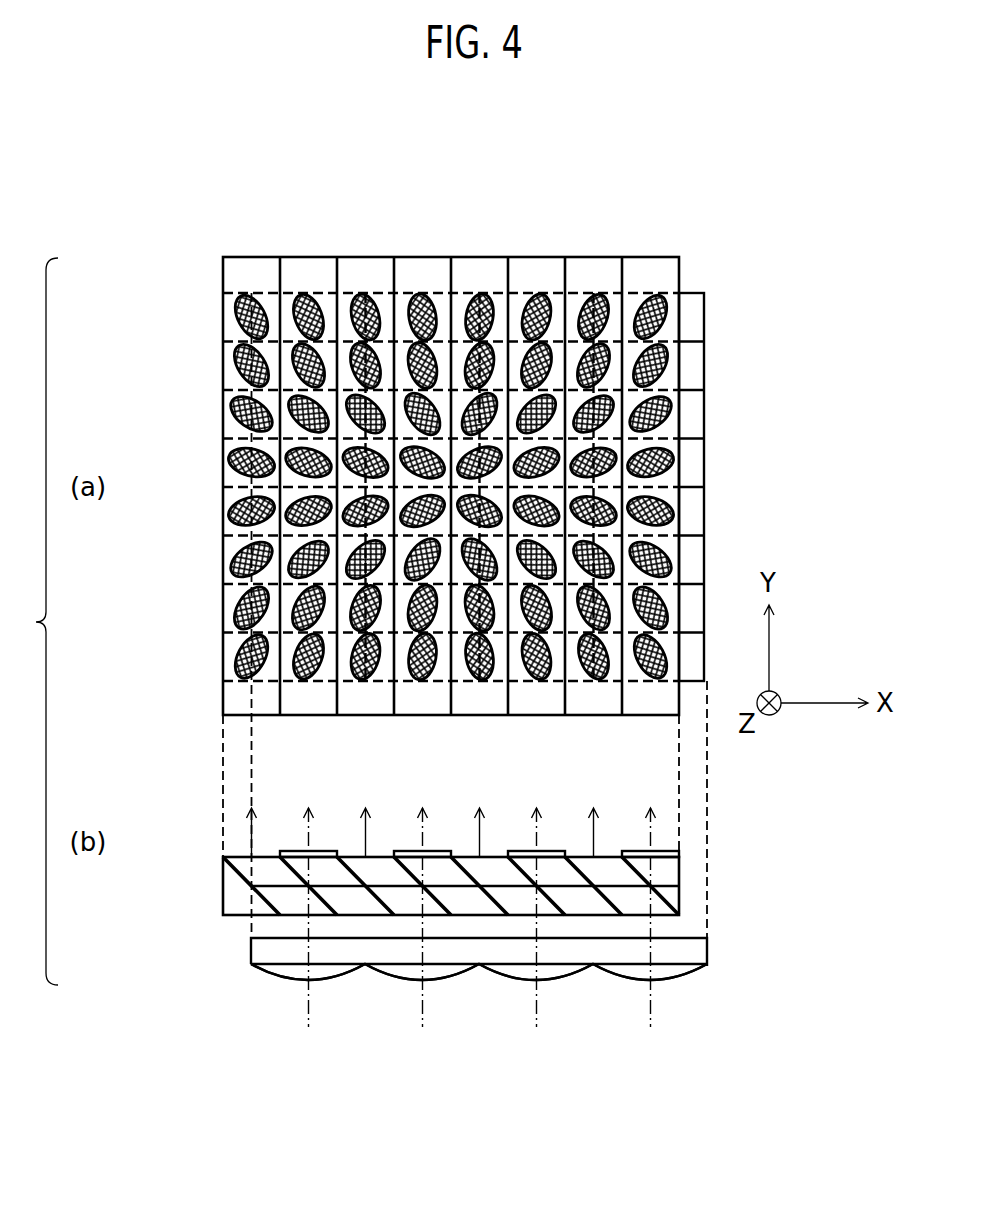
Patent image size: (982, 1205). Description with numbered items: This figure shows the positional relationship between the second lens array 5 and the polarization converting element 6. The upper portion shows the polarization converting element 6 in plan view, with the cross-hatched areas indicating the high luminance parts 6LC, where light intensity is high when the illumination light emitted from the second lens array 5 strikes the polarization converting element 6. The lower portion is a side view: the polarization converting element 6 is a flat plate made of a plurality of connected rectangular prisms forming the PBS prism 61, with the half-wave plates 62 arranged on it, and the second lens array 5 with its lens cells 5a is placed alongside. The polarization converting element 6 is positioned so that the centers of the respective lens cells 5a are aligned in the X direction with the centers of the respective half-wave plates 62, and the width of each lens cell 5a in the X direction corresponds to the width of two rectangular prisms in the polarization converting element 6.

The second lens array 5 is at (705, 405).
The lens cell 5a is at (325, 981).
The polarization converting element 6 is at (542, 257).
The PBS prism 61 is at (673, 888).
The half-wave plate 62 is at (320, 851).
The high luminance part 6LC is at (237, 310).